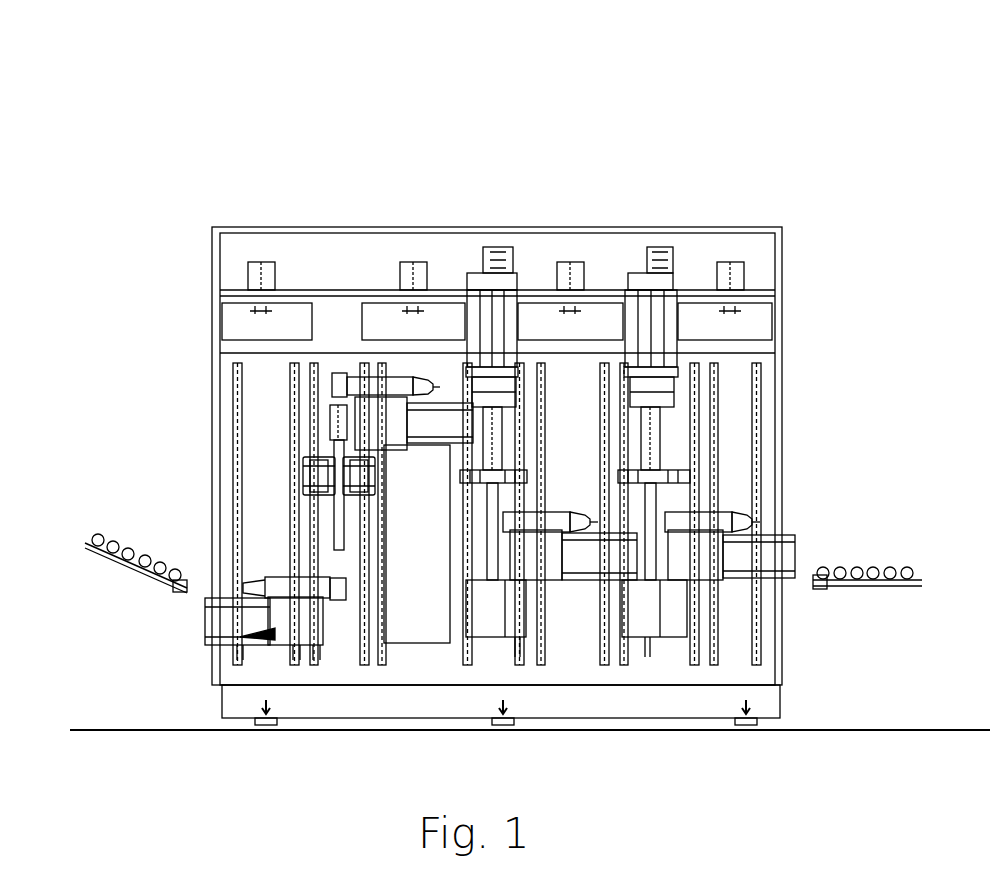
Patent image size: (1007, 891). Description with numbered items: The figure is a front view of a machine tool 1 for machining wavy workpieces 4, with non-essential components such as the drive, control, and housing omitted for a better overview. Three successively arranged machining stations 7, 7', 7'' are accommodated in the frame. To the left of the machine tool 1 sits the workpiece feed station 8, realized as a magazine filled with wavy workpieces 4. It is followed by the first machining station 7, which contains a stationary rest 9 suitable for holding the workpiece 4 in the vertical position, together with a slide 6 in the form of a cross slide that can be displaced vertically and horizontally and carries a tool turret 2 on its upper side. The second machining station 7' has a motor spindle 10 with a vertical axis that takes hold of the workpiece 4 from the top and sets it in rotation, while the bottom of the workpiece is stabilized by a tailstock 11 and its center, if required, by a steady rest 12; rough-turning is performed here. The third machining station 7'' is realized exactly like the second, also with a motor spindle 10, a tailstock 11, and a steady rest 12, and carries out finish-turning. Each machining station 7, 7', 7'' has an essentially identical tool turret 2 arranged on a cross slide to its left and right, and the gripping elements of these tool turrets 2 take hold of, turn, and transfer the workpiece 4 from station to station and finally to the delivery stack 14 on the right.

The machine tool 1 is at (553, 223).
The tool turret 2 is at (387, 393).
The workpiece 4 is at (333, 423).
The slide 6 is at (237, 650).
The first machining station 7 is at (329, 108).
The second machining station 7' is at (498, 103).
The third machining station 7'' is at (656, 94).
The workpiece feed station 8 is at (150, 593).
The stationary rest 9 is at (303, 483).
The motor spindle 10 is at (473, 313).
The tailstock 11 is at (493, 577).
The steady rest 12 is at (618, 474).
The delivery stack 14 is at (863, 595).